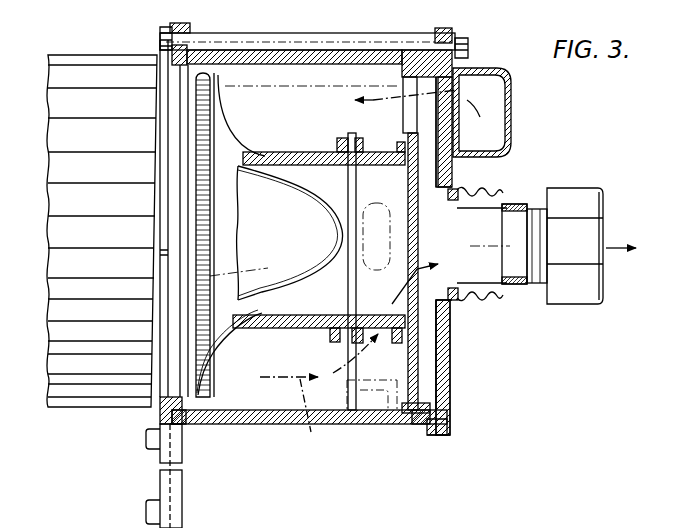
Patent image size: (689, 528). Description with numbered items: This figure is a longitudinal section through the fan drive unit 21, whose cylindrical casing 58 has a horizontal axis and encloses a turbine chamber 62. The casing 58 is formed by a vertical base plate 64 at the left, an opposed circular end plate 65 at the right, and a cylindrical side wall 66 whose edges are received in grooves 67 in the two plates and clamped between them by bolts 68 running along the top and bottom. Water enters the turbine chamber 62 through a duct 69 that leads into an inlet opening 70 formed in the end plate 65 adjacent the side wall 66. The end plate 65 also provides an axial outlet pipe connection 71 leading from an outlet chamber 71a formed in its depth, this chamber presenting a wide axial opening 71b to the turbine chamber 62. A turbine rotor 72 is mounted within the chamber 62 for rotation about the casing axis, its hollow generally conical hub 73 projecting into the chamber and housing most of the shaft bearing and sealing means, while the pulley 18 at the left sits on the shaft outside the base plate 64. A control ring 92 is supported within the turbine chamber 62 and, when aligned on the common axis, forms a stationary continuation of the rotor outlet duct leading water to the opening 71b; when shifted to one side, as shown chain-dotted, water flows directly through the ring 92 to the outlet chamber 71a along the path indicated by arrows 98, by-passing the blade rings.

The pulley 18 is at (95, 53).
The bolts 68 is at (264, 46).
The turbine chamber 62 is at (292, 150).
The control ring 92 is at (396, 112).
The inlet opening 70 is at (450, 136).
The duct 69 is at (508, 121).
The axial opening 71b is at (453, 180).
The hollow generally conical hub 73 is at (300, 206).
The outlet chamber 71a is at (458, 246).
The circular end plate 65 is at (449, 328).
The axial outlet pipe connection 71 is at (557, 304).
The turbine rotor 72 is at (235, 320).
The fan drive unit 21 is at (447, 396).
The vertical base plate 64 is at (159, 410).
The grooves 67 is at (183, 418).
The cylindrical side wall 66 is at (254, 424).
The flow path 98 is at (313, 420).
The cylindrical casing 58 is at (446, 432).